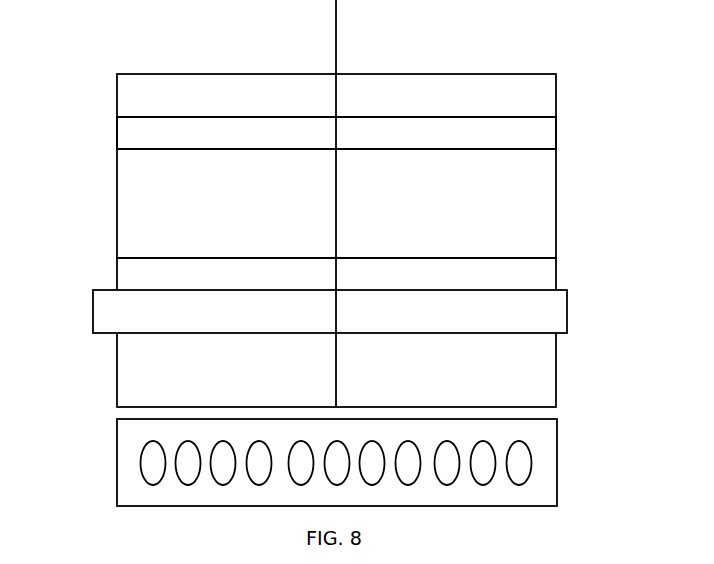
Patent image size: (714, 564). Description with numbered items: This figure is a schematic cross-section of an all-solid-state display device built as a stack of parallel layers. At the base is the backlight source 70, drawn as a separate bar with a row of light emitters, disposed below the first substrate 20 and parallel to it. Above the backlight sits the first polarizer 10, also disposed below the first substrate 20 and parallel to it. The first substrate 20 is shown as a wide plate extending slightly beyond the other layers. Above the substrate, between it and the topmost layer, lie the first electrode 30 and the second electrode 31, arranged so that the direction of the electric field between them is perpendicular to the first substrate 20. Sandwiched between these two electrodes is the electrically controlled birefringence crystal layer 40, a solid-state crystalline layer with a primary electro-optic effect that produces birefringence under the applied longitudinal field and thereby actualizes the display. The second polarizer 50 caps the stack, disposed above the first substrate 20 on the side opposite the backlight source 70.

The first polarizer 10 is at (557, 369).
The first substrate 20 is at (567, 310).
The first electrode 30 is at (520, 273).
The second electrode 31 is at (134, 130).
The electrically controlled birefringence crystal layer 40 is at (460, 237).
The second polarizer 50 is at (557, 95).
The backlight source 70 is at (557, 462).